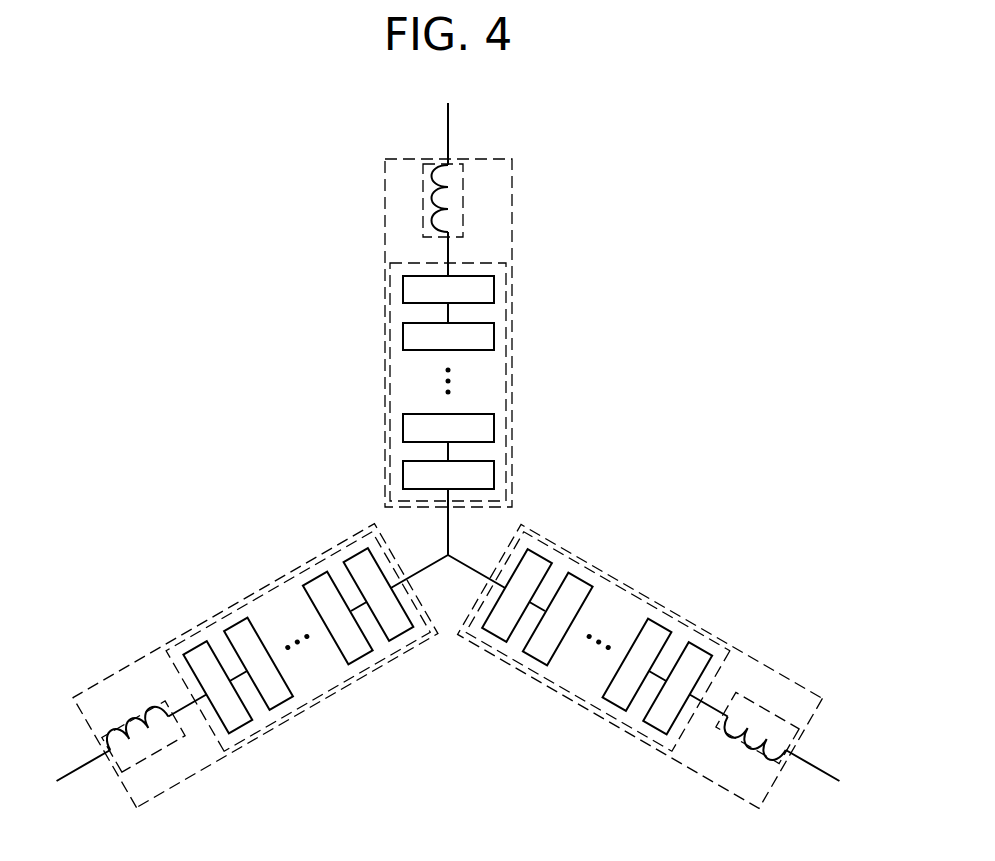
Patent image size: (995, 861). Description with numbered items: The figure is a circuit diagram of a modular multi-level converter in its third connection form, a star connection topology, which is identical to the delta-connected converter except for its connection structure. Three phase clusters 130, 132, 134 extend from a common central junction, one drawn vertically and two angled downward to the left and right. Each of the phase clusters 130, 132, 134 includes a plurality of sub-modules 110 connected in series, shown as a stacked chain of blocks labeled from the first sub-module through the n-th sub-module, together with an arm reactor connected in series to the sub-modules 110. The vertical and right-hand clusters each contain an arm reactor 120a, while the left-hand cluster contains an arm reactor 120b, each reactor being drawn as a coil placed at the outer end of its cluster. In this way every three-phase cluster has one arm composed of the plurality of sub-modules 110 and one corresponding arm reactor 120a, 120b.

The sub-modules 110 is at (508, 370).
The arm reactor 120a is at (422, 192).
The arm reactor 120b is at (158, 743).
The phase cluster 130 is at (512, 227).
The phase cluster 132 is at (132, 663).
The phase cluster 134 is at (700, 775).